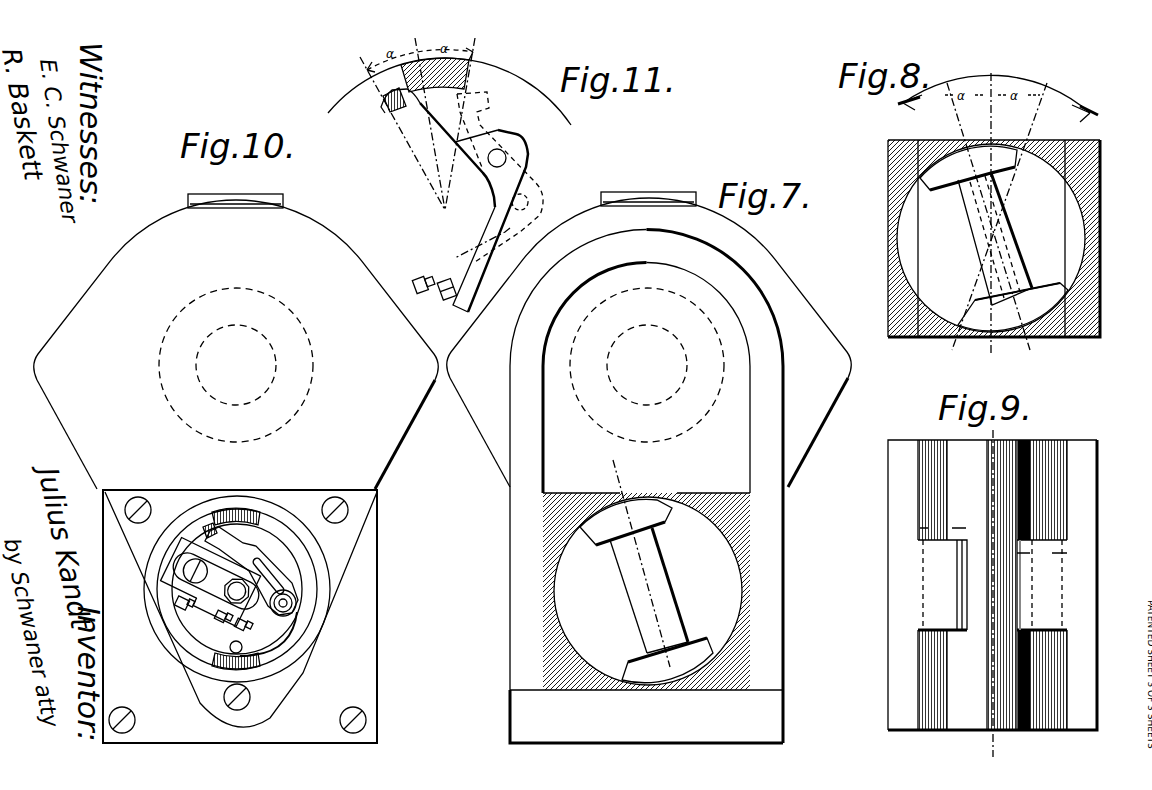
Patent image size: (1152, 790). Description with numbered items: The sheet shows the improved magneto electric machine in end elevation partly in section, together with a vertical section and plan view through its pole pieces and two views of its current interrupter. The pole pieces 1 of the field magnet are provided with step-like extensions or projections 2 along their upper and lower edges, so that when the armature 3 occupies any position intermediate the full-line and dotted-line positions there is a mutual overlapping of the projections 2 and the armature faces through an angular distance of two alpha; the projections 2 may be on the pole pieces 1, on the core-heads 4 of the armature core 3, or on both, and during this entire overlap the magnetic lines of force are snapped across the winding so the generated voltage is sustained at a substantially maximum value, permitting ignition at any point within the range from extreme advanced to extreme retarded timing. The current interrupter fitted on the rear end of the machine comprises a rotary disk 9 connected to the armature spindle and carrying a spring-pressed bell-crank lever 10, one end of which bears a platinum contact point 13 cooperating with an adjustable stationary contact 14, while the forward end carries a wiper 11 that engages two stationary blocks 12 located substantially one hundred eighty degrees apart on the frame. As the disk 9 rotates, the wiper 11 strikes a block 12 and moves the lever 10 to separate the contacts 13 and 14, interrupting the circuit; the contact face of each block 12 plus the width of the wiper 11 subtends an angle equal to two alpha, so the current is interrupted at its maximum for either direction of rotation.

In FIG. 7, the pole pieces 1 is at (556, 603).
In FIG. 8, the pole pieces 1 is at (888, 246).
In FIG. 9, the pole pieces 1 is at (902, 548).
In FIG. 7, the step-like extensions or projections 2 is at (622, 498).
In FIG. 8, the step-like extensions or projections 2 is at (946, 140).
In FIG. 9, the step-like extensions or projections 2 is at (943, 588).
In FIG. 7, the armature 3 is at (660, 575).
In FIG. 8, the armature 3 is at (1010, 238).
In FIG. 7, the core-heads 4 is at (603, 530).
In FIG. 8, the core-heads 4 is at (992, 150).
In FIG. 9, the core-heads 4 is at (983, 722).
In FIG. 10, the rotary disk 9 is at (187, 613).
In FIG. 10, the bell-crank lever 10 is at (255, 556).
In FIG. 11, the bell-crank lever 10 is at (497, 137).
In FIG. 10, the wiper 11 is at (210, 530).
In FIG. 11, the wiper 11 is at (387, 113).
In FIG. 10, the stationary blocks 12 is at (233, 513).
In FIG. 11, the stationary blocks 12 is at (472, 64).
In FIG. 10, the platinum contact point 13 is at (238, 628).
In FIG. 11, the platinum contact point 13 is at (443, 298).
In FIG. 10, the adjustable stationary contact 14 is at (223, 624).
In FIG. 11, the adjustable stationary contact 14 is at (424, 274).